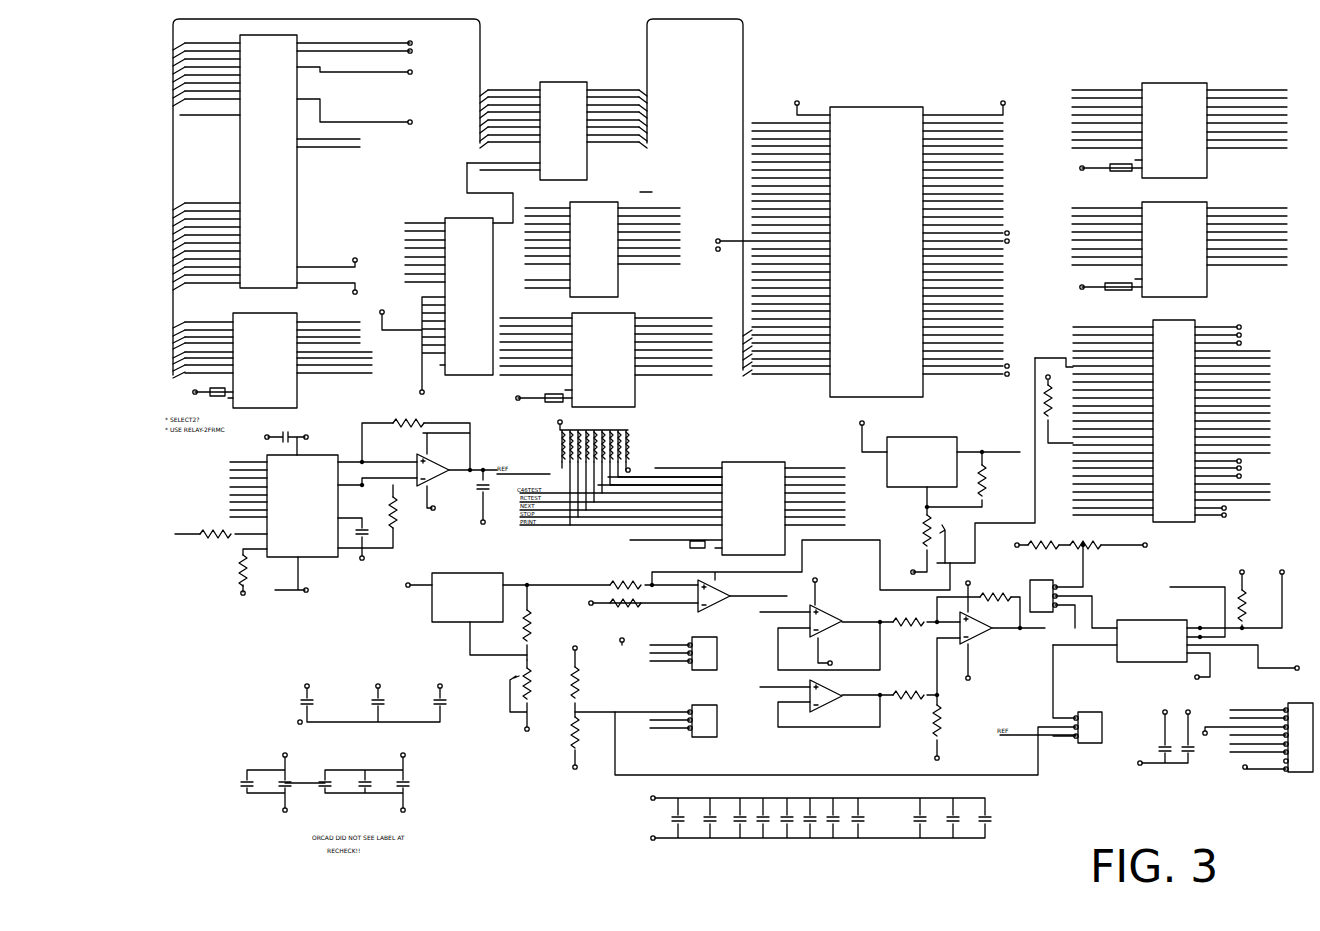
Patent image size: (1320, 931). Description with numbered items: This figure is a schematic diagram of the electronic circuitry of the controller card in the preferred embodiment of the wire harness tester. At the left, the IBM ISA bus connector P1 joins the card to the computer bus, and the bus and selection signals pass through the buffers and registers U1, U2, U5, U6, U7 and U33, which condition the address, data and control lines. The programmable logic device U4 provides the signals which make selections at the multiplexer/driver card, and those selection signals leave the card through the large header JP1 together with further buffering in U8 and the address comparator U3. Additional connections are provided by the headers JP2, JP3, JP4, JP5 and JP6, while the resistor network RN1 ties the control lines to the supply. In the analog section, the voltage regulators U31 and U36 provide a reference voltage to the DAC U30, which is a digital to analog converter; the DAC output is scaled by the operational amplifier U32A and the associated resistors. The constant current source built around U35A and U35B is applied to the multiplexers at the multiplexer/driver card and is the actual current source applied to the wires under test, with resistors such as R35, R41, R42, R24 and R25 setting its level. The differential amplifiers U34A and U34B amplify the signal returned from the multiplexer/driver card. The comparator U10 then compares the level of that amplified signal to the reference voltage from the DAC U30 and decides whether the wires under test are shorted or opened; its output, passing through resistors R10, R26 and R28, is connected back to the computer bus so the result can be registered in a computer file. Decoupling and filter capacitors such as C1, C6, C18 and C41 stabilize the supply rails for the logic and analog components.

The IBM ISA bus connector P1 is at (305, 162).
The buffer U1 is at (271, 360).
The buffer U2 is at (553, 131).
The 74HCT688 comparator U3 is at (444, 283).
The selection signal source U4 is at (862, 251).
The buffer U5 is at (1174, 130).
The buffer U6 is at (1174, 249).
The buffer U7 is at (606, 360).
The 74HCT244 buffer U8 is at (682, 508).
The register U33 is at (600, 249).
The HEADER 25X2 connector JP1 is at (1171, 421).
The ISP header JP2 is at (1254, 737).
The HEADER 3 JP3 is at (1073, 586).
The HEADER 3 JP4 is at (1081, 728).
The HEADER 3 JP5 is at (670, 654).
The HEADER 3 JP6 is at (845, 735).
The DAC U30 is at (296, 510).
The voltage regulator U31 is at (935, 495).
The TL072 op amp U32A is at (428, 480).
The differential amplifier U34A is at (860, 620).
The differential amplifier U34B is at (848, 695).
The constant current source / differential amplifier U35A is at (991, 631).
The constant current source / differential amplifier U35B is at (737, 577).
The voltage regulator U36 is at (461, 606).
The comparator U10 is at (1183, 621).
The SIP-10PIN resistor network RN1 is at (631, 471).
The resistor R10 is at (1250, 595).
The resistor 1680 R24 is at (581, 678).
The resistor 6.8K R25 is at (581, 745).
The resistor 1K R26 is at (1079, 551).
The resistor R28 is at (1054, 400).
The resistor 500K R35 is at (947, 694).
The resistor R41 is at (535, 622).
The potentiometer R42 is at (531, 700).
The capacitor C1 is at (1158, 734).
The capacitor C6 is at (817, 818).
The capacitor 220uF C18 is at (368, 710).
The capacitor C41 is at (333, 782).